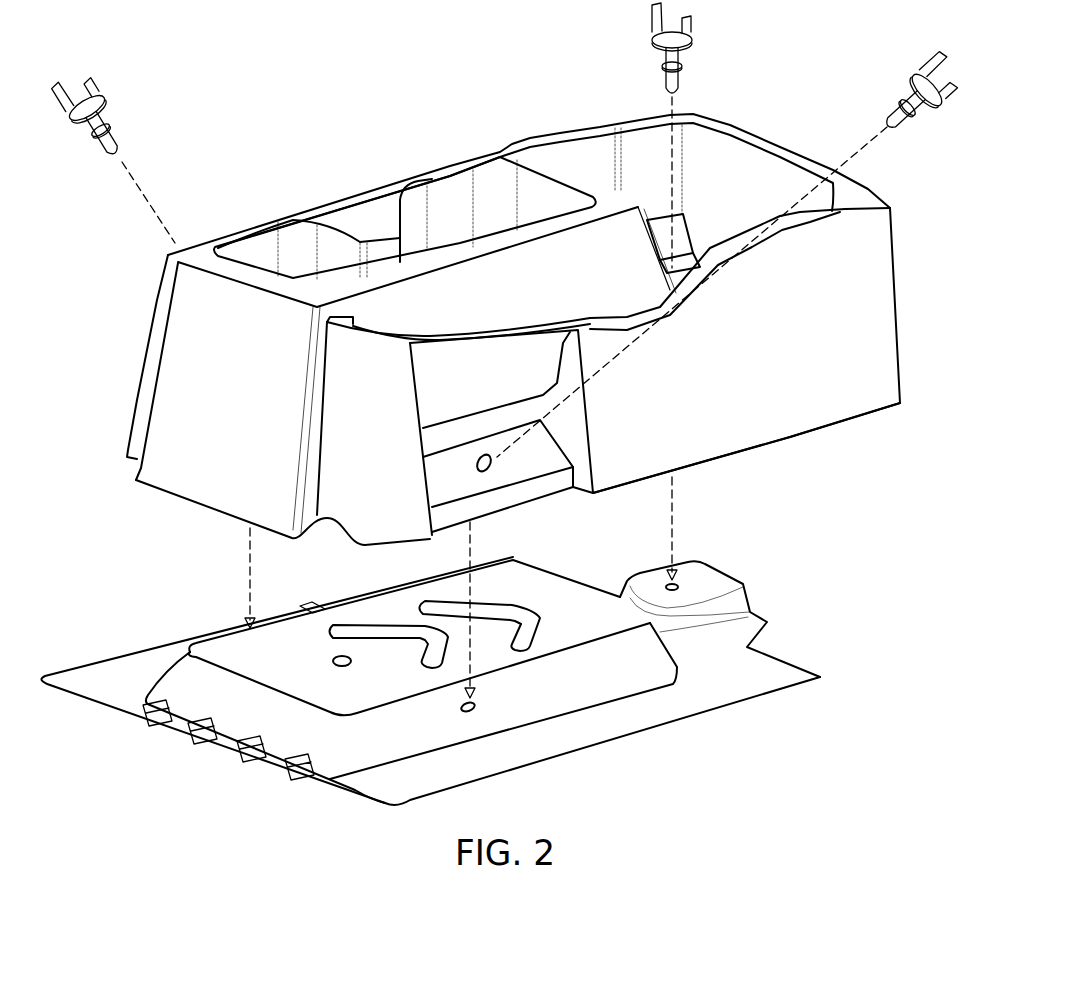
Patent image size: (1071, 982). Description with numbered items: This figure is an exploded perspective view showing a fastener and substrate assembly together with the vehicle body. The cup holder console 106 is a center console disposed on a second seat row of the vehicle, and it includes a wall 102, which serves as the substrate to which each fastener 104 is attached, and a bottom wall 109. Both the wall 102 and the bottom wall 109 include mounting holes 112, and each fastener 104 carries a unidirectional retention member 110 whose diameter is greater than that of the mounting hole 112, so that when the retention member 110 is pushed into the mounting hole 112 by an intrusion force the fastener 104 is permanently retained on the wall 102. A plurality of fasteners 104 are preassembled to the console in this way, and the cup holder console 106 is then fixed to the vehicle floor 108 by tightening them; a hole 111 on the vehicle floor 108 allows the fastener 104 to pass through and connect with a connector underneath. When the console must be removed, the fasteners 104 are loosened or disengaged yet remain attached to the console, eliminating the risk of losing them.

The wall 102 is at (535, 463).
The fastener 104 is at (106, 105).
The cup holder console 106 is at (902, 257).
The vehicle floor 108 is at (803, 690).
The bottom wall 109 is at (787, 441).
The unidirectional retention member 110 is at (683, 64).
The hole 111 is at (474, 708).
The mounting hole 112 is at (491, 473).